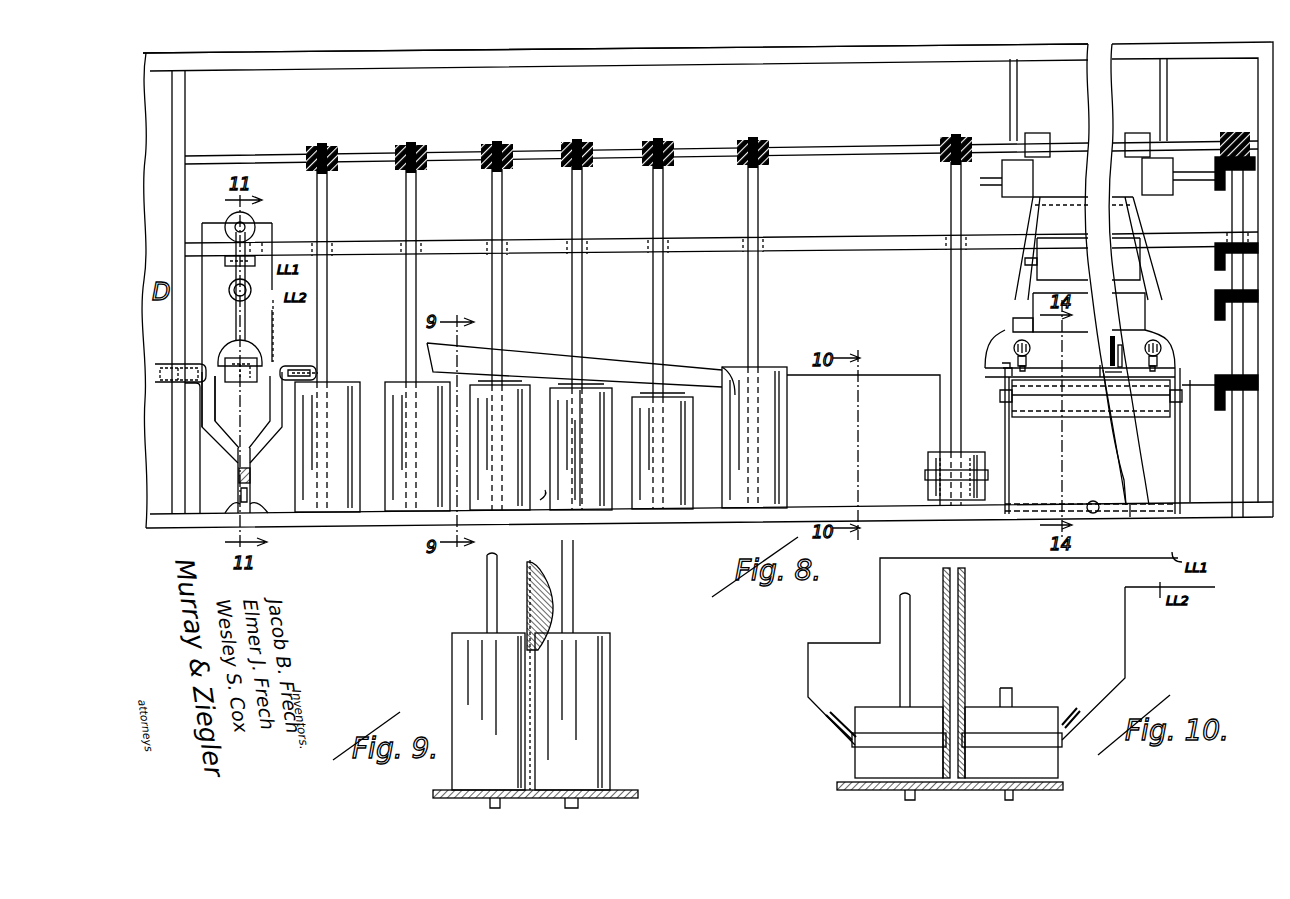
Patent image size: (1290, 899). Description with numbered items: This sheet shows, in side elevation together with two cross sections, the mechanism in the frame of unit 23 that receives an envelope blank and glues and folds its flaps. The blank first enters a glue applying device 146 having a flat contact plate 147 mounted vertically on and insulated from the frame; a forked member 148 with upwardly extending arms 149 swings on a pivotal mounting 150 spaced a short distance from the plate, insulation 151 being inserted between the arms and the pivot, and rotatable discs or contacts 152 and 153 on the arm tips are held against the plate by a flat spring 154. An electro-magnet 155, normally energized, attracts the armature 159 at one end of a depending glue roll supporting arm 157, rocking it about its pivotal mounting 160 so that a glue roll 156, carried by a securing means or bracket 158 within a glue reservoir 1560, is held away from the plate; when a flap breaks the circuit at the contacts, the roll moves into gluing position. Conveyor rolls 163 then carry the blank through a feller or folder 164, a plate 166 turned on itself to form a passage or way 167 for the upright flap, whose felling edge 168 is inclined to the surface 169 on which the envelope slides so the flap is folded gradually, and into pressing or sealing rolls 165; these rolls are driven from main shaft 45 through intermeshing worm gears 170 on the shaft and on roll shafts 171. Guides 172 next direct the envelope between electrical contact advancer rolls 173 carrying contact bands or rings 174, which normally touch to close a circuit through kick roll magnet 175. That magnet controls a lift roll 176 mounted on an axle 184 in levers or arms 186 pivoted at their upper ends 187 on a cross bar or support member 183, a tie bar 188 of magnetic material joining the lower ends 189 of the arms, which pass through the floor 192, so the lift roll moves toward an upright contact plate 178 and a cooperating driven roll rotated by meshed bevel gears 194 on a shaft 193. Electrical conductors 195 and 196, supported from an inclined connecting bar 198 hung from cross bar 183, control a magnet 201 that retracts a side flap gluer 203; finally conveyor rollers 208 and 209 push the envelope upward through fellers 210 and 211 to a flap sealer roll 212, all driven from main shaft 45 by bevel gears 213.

In FIG. 8, the unit 23 is at (797, 78).
In FIG. 8, the main shaft 45 is at (223, 157).
In FIG. 8, the intermeshing worm gears 170 is at (525, 145).
In FIG. 8, the roll shafts 171 is at (503, 208).
In FIG. 9, the roll shafts 171 is at (574, 548).
In FIG. 8, the electro-magnet 155 is at (250, 222).
In FIG. 8, the armature 159 is at (225, 229).
In FIG. 8, the pivotal mounting 160 is at (228, 262).
In FIG. 8, the glue roll supporting arm 157 is at (238, 311).
In FIG. 8, the securing means or bracket 158 is at (220, 353).
In FIG. 8, the glue roll 156 is at (243, 385).
In FIG. 8, the forked member 148 is at (284, 358).
In FIG. 8, the disc or contact 153 is at (311, 366).
In FIG. 8, the glue reservoir 1560 is at (158, 369).
In FIG. 8, the disc or contact 152 is at (153, 382).
In FIG. 8, the pivotal mounting 150 is at (272, 500).
In FIG. 8, the flat contact plate 147 is at (215, 392).
In FIG. 8, the upwardly extending arms 149 is at (208, 432).
In FIG. 8, the flat spring 154 is at (252, 480).
In FIG. 8, the glue applying device 146 is at (213, 392).
In FIG. 8, the insulation 151 is at (222, 404).
In FIG. 8, the conveyor rolls 163 is at (404, 490).
In FIG. 9, the conveyor rolls 163 is at (470, 660).
In FIG. 8, the pressing or sealing rolls 165 is at (742, 372).
In FIG. 8, the felling edge 168 is at (608, 362).
In FIG. 8, the feller or folder 164 is at (633, 372).
In FIG. 9, the feller or folder 164 is at (550, 605).
In FIG. 8, the plate 166 is at (620, 470).
In FIG. 9, the plate 166 is at (530, 612).
In FIG. 9, the passage or way 167 is at (540, 585).
In FIG. 8, the surface 169 is at (543, 500).
In FIG. 8, the guides 172 is at (892, 396).
In FIG. 10, the guides 172 is at (942, 592).
In FIG. 8, the electrical contact advancer rolls 173 is at (930, 480).
In FIG. 10, the electrical contact advancer rolls 173 is at (880, 722).
In FIG. 8, the contact band or ring 174 is at (975, 476).
In FIG. 10, the contact band or ring 174 is at (878, 742).
In FIG. 8, the upper ends 187 is at (1007, 368).
In FIG. 8, the levers or arms 186 is at (1010, 468).
In FIG. 8, the cross bar or support member 183 is at (1091, 409).
In FIG. 8, the axle 184 is at (1185, 401).
In FIG. 8, the lift roll 176 is at (1155, 412).
In FIG. 8, the kick roll magnet 175 is at (1092, 513).
In FIG. 8, the upright contact plate 178 is at (1124, 507).
In FIG. 8, the tie bar 188 is at (1142, 508).
In FIG. 8, the lower ends 189 is at (1008, 512).
In FIG. 8, the floor 192 is at (1213, 500).
In FIG. 8, the magnet 201 is at (1104, 345).
In FIG. 8, the side flap gluer 203 is at (1109, 358).
In FIG. 8, the electrical conductor 196 is at (1108, 343).
In FIG. 8, the inclined connecting bar 198 is at (1123, 360).
In FIG. 8, the electrical conductor 195 is at (1102, 370).
In FIG. 8, the flap sealer roll 212 is at (1130, 165).
In FIG. 8, the feller 211 is at (1030, 211).
In FIG. 8, the conveyor rollers 209 is at (1130, 232).
In FIG. 8, the feller 210 is at (1150, 249).
In FIG. 8, the conveyor rollers 208 is at (1140, 308).
In FIG. 8, the bevel gears 213 is at (1226, 140).
In FIG. 8, the shaft 193 is at (1240, 325).
In FIG. 8, the meshed bevel gears 194 is at (1232, 378).